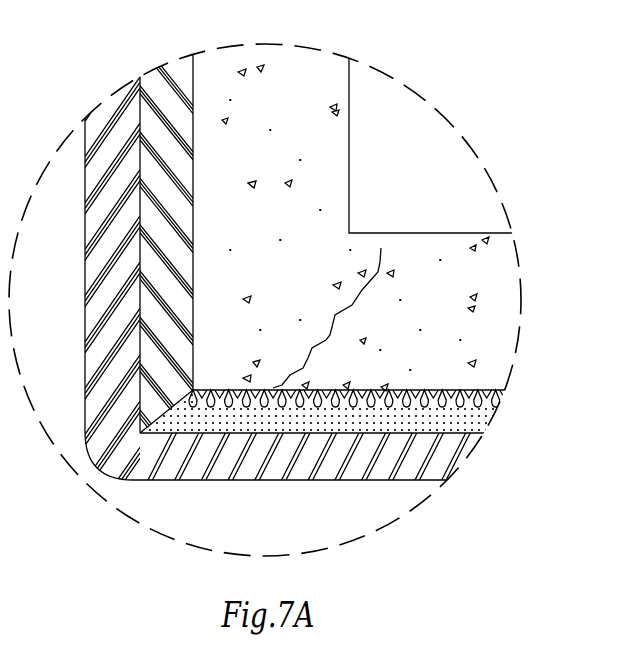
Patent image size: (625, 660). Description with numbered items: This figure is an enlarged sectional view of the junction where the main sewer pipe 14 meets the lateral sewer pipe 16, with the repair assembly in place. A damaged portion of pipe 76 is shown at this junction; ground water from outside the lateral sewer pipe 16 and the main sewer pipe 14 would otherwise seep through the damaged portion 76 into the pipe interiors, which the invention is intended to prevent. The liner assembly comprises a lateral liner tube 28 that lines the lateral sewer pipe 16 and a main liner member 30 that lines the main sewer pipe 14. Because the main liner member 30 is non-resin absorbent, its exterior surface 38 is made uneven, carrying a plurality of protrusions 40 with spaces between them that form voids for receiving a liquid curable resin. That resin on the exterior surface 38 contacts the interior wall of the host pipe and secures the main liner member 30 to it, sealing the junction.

The main sewer pipe 14 is at (505, 233).
The lateral sewer pipe 16 is at (352, 152).
The lateral liner tube 28 is at (84, 273).
The main liner member 30 is at (479, 412).
The exterior surface 38 is at (479, 390).
The protrusions 40 is at (166, 64).
The damaged portion of pipe 76 is at (381, 248).